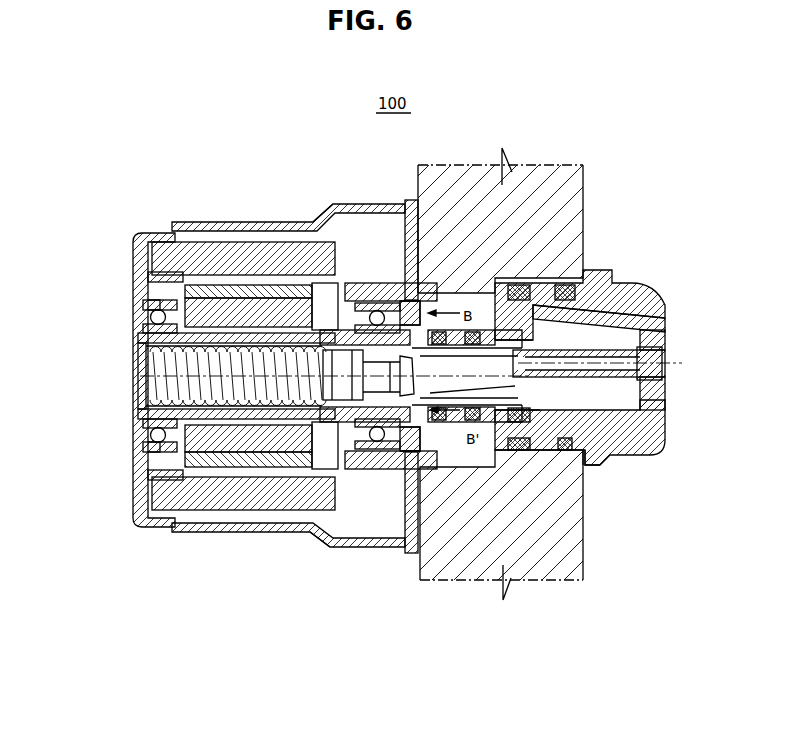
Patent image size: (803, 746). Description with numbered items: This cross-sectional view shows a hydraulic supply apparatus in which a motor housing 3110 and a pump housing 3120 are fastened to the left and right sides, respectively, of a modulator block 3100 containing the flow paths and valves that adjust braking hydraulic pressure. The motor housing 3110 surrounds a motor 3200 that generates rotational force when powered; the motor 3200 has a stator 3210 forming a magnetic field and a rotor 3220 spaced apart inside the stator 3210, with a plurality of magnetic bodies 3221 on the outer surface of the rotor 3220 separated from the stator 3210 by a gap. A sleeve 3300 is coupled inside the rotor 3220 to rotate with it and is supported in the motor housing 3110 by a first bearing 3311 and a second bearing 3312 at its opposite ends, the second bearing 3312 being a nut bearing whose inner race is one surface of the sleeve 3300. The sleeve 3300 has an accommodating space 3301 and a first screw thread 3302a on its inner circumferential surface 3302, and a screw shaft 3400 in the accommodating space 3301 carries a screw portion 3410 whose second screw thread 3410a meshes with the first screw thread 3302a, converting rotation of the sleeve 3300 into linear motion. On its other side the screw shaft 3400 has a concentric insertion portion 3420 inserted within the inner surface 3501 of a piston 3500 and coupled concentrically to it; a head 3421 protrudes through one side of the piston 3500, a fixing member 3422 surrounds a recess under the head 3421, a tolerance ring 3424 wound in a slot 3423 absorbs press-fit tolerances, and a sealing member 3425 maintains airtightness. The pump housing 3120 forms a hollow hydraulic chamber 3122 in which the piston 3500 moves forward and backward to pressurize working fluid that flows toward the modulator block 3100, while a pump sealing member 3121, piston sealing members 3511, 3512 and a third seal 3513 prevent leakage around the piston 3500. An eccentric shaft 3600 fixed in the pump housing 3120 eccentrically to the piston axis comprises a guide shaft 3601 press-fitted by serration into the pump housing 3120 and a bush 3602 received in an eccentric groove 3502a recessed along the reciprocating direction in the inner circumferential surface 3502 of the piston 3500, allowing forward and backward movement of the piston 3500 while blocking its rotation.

The modulator block 3100 is at (578, 182).
The motor housing 3110 is at (245, 222).
The pump housing 3120 is at (603, 421).
The pump sealing member 3121 is at (563, 293).
The hydraulic chamber 3122 is at (520, 292).
The motor 3200 is at (173, 386).
The stator 3210 is at (165, 500).
The rotor 3220 is at (185, 447).
The magnetic body 3221 is at (195, 462).
The sleeve 3300 is at (238, 368).
The accommodating space 3301 is at (200, 348).
The inner circumferential surface 3302 is at (255, 345).
The first screw thread 3302a is at (280, 405).
The first bearing 3311 is at (163, 262).
The second bearing 3312 is at (363, 298).
The screw shaft 3400 is at (230, 674).
The screw portion 3410 is at (180, 470).
The second screw thread 3410a is at (158, 420).
The concentric insertion portion 3420 is at (304, 424).
The head 3421 is at (410, 470).
The fixing member 3422 is at (397, 440).
The slot 3423 is at (300, 420).
The tolerance ring 3424 is at (232, 530).
The sealing member 3425 is at (365, 445).
The piston 3500 is at (481, 498).
The inner surface 3501 is at (455, 388).
The inner circumferential surface 3502 is at (550, 433).
The eccentric groove 3502a is at (522, 452).
The piston sealing member 3511 is at (432, 422).
The piston sealing member 3512 is at (492, 437).
The third seal 3513 is at (540, 470).
The eccentric shaft 3600 is at (624, 386).
The guide shaft 3601 is at (668, 358).
The bush 3602 is at (603, 310).